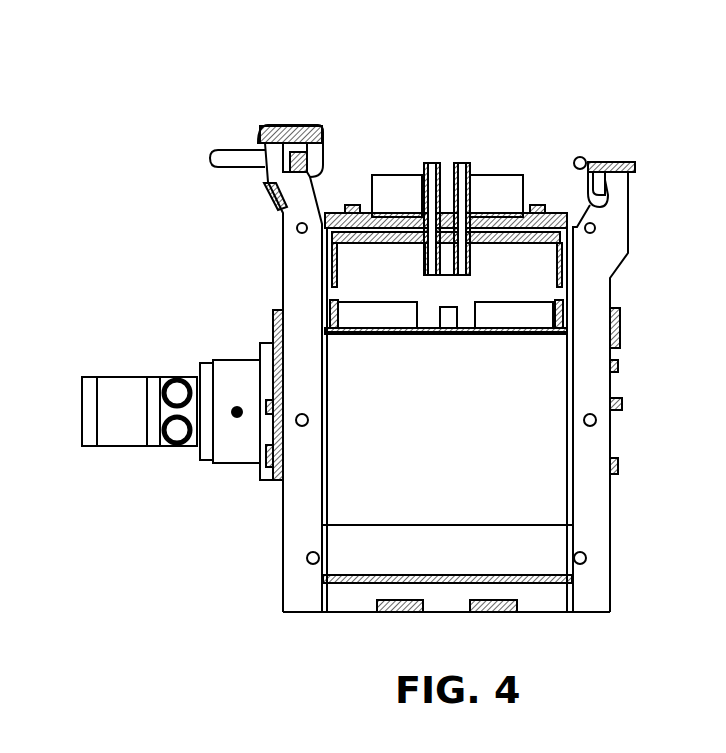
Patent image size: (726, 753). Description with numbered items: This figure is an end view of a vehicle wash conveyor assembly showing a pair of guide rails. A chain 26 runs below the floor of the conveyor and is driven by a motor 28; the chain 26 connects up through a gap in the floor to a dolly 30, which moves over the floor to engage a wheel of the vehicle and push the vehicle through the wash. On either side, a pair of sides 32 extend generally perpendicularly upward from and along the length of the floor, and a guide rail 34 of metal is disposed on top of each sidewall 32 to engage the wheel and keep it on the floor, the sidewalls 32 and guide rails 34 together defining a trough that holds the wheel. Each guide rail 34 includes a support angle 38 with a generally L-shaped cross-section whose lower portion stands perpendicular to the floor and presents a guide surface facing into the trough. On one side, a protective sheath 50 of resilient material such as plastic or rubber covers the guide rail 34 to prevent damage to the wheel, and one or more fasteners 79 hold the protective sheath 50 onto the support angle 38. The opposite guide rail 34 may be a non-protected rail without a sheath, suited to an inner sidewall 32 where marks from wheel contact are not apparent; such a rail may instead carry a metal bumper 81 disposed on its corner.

The chain 26 is at (465, 268).
The motor 28 is at (124, 375).
The dolly 30 is at (393, 178).
The side 32 is at (630, 220).
The guide rail 34 is at (270, 158).
The support angle 38 is at (612, 162).
The protective sheath 50 is at (303, 128).
The fastener 79 is at (284, 122).
The bumper 81 is at (582, 156).